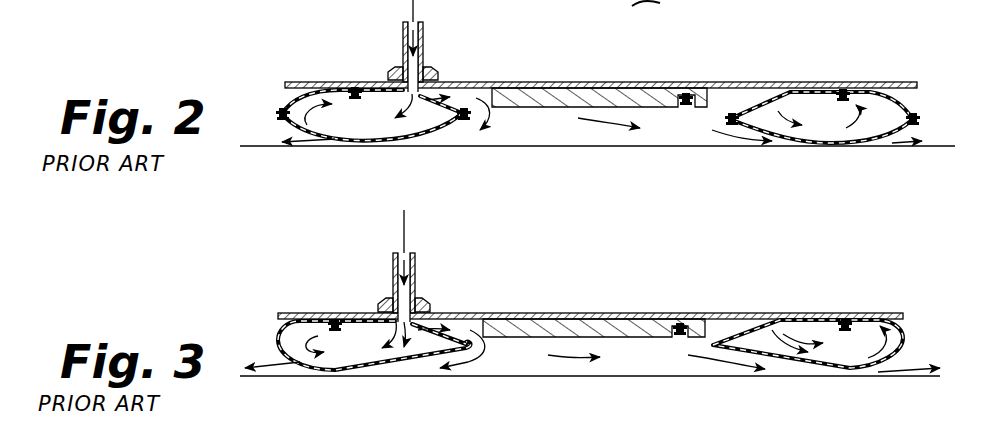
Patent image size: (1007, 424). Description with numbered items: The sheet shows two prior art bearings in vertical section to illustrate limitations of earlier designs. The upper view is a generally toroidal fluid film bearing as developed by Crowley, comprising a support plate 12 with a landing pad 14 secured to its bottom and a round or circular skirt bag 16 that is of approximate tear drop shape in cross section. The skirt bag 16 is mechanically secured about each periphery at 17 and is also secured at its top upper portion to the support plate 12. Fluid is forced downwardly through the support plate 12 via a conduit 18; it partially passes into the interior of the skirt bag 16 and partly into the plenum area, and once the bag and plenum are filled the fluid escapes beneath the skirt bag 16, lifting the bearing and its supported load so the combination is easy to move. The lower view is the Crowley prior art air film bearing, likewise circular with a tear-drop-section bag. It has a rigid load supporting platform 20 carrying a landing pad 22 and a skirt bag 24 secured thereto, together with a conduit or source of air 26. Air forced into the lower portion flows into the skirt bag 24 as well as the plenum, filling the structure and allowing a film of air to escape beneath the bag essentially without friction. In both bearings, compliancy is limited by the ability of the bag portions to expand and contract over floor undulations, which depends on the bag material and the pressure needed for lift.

In FIG. 2, the support plate 12 is at (652, 82).
In FIG. 2, the landing pad 14 is at (566, 98).
In FIG. 2, the skirt bag 16 is at (378, 142).
In FIG. 2, the periphery securing point 17 is at (278, 128).
In FIG. 2, the conduit 18 is at (425, 46).
In FIG. 3, the load supporting platform 20 is at (610, 313).
In FIG. 3, the landing pad 22 is at (620, 330).
In FIG. 3, the skirt bag 24 is at (368, 373).
In FIG. 3, the conduit or source of air 26 is at (416, 284).